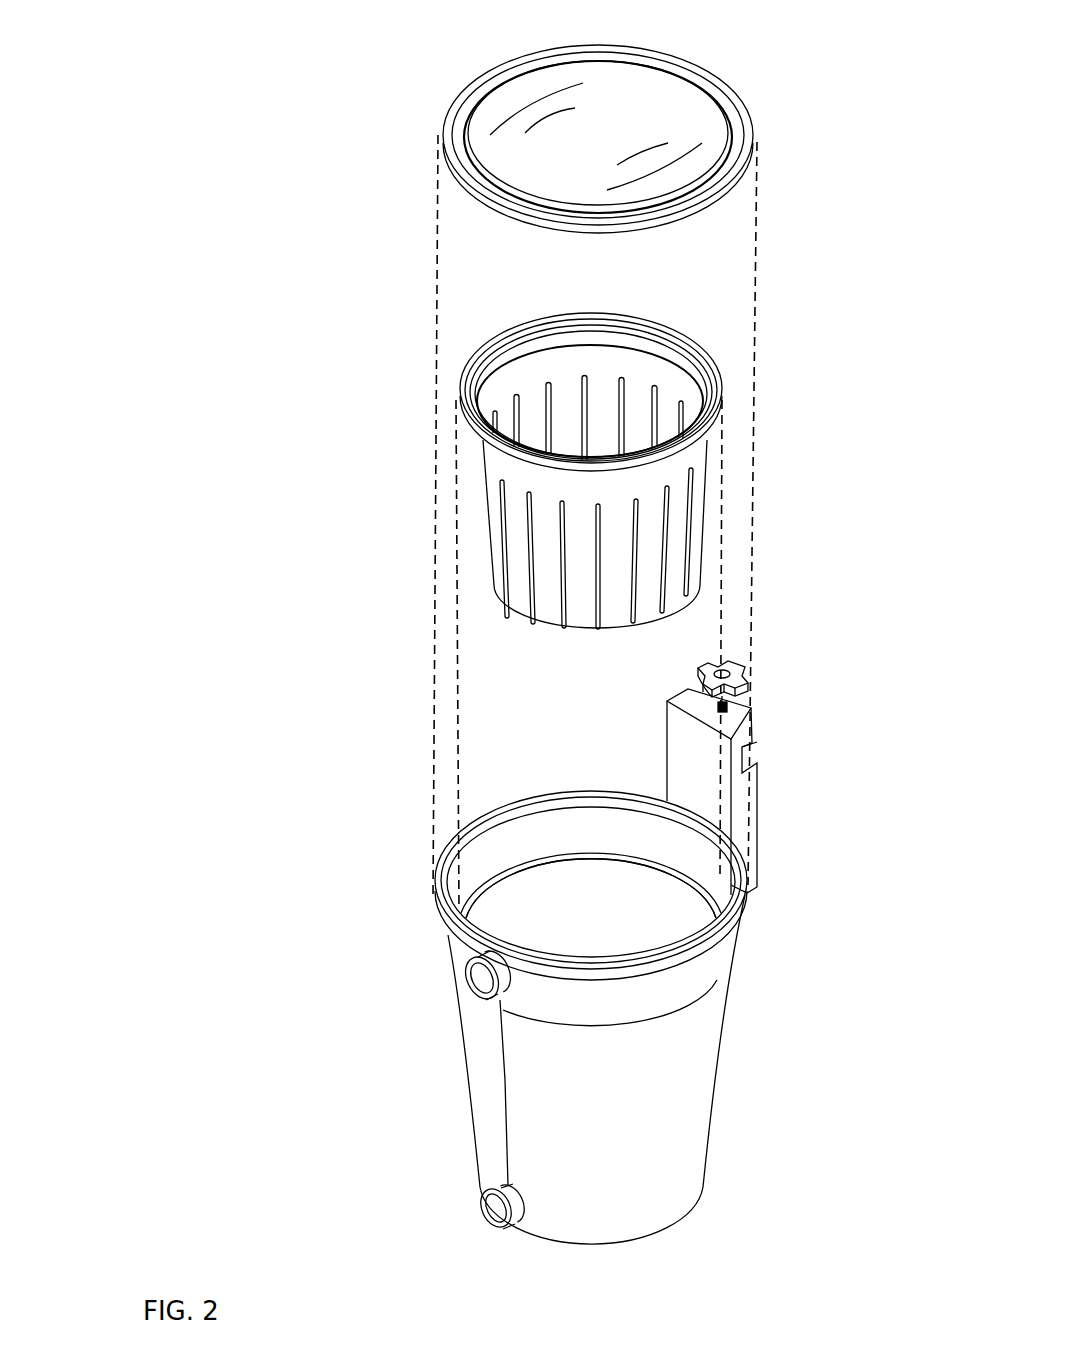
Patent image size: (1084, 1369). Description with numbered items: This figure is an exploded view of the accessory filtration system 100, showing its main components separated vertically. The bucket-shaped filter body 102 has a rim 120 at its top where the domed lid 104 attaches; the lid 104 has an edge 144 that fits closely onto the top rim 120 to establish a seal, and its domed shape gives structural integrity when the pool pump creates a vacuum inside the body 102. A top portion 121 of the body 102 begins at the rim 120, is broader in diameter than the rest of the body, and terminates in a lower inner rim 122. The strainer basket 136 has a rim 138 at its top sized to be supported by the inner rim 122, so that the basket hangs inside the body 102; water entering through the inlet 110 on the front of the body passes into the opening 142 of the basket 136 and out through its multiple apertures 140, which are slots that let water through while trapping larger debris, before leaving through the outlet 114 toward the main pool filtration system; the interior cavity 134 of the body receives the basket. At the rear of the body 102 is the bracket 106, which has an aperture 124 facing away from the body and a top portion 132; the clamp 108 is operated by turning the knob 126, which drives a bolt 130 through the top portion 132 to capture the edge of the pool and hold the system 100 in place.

The accessory filtration system 100 is at (250, 242).
The filter body 102 is at (575, 1018).
The lid 104 is at (585, 138).
The bracket 106 is at (747, 770).
The clamp 108 is at (794, 641).
The inlet 110 is at (470, 985).
The outlet 114 is at (488, 1210).
The rim 120 is at (442, 913).
The top portion 121 is at (487, 850).
The lower inner rim 122 is at (540, 857).
The aperture 124 is at (762, 746).
The knob 126 is at (747, 680).
The bolt 130 is at (738, 700).
The top portion of bracket 132 is at (690, 698).
The bucket interior 134 is at (662, 917).
The strainer basket 136 is at (563, 476).
The rim 138 is at (467, 362).
The apertures 140 is at (563, 565).
The opening 142 is at (633, 433).
The edge 144 is at (473, 198).